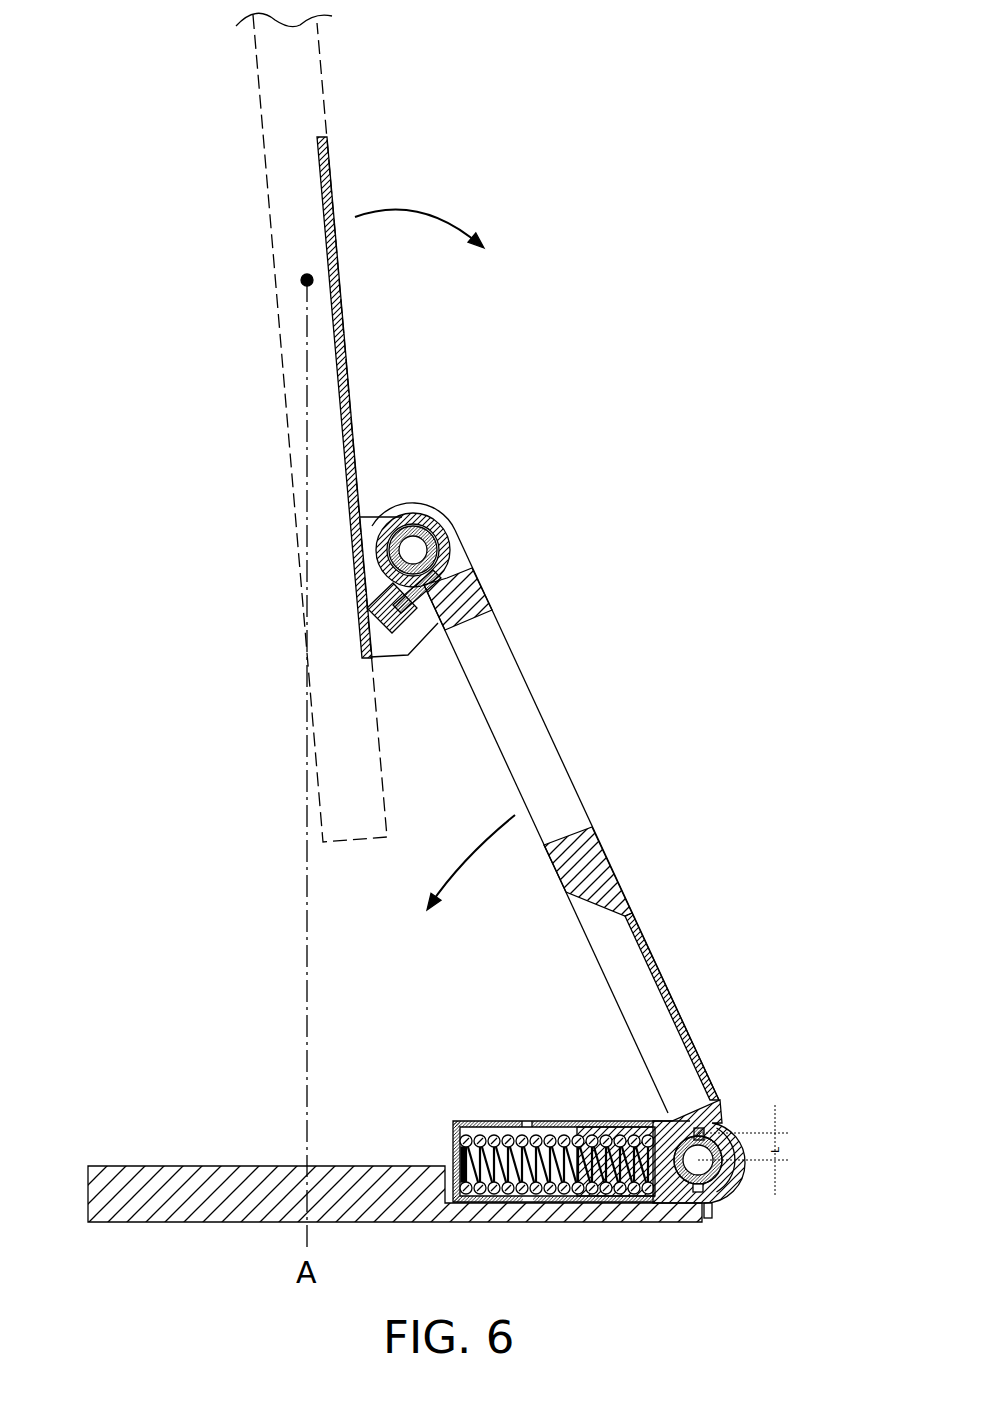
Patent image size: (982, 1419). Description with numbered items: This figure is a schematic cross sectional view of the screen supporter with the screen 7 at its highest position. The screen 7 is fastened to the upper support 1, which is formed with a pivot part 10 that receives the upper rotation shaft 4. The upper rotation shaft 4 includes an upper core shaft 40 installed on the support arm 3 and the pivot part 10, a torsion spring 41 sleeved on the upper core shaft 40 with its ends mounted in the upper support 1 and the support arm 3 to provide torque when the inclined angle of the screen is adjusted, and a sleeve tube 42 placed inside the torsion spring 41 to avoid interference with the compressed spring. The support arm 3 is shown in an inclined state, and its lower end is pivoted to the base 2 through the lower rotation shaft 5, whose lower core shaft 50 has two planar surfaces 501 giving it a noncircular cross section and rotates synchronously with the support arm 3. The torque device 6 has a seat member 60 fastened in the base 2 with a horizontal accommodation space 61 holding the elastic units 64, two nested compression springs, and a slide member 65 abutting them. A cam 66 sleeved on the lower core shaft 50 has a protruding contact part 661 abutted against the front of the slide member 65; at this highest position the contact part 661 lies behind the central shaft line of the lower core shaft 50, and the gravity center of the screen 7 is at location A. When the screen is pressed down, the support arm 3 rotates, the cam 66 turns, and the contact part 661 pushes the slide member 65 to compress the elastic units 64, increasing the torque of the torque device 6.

The upper support 1 is at (343, 303).
The base 2 is at (233, 1195).
The support arm 3 is at (548, 771).
The upper rotation shaft 4 is at (406, 505).
The lower rotation shaft 5 is at (707, 1155).
The torque device 6 is at (485, 1107).
The screen 7 is at (283, 178).
The pivot part 10 is at (374, 518).
The upper core shaft 40 is at (449, 560).
The torsion spring 41 is at (430, 600).
The sleeve tube 42 is at (442, 548).
The lower core shaft 50 is at (690, 1195).
The seat member 60 is at (452, 1128).
The accommodation space 61 is at (565, 1121).
The elastic unit 64 is at (547, 1135).
The slide member 65 is at (650, 1128).
The cam 66 is at (738, 1185).
The planar surface 501 is at (700, 1135).
The contact part 661 is at (712, 1132).